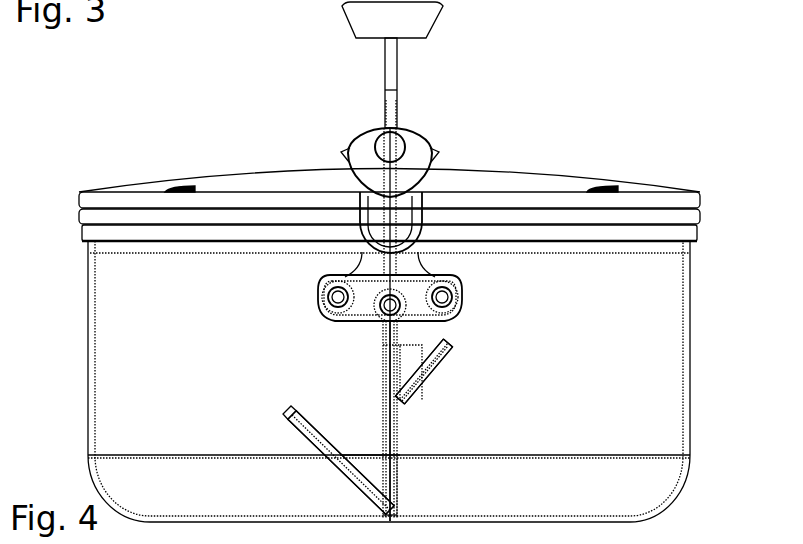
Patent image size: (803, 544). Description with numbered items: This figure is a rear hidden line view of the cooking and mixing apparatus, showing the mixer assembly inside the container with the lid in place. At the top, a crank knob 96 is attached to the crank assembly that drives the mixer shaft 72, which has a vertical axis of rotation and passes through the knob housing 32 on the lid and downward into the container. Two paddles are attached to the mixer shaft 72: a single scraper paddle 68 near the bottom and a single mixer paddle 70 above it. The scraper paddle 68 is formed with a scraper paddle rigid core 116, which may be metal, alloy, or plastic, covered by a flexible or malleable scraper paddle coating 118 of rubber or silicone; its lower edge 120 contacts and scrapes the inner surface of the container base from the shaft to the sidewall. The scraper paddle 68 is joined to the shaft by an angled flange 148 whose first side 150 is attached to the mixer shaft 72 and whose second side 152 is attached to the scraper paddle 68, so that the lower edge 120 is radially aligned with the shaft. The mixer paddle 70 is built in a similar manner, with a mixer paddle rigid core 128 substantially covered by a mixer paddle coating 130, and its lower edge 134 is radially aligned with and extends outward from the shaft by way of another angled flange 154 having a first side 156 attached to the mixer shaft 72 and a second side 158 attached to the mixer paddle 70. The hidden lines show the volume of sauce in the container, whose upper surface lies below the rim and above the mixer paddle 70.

The crank knob 96 is at (443, 2).
The knob 32 is at (412, 131).
The mixer shaft 72 is at (398, 437).
The mixer paddle coating 130 is at (452, 346).
The mixer paddle rigid core 128 is at (440, 363).
The mixer paddle 70 is at (425, 378).
The second side 158 is at (407, 392).
The angled flange 154 is at (438, 338).
The first side 156 is at (384, 358).
The lower edge 134 is at (398, 400).
The scraper paddle coating 118 is at (308, 442).
The scraper paddle rigid core 116 is at (340, 467).
The second side 152 is at (347, 470).
The scraper paddle 68 is at (362, 492).
The angled flange 148 is at (372, 455).
The first side 150 is at (398, 478).
The lower edge 120 is at (392, 514).